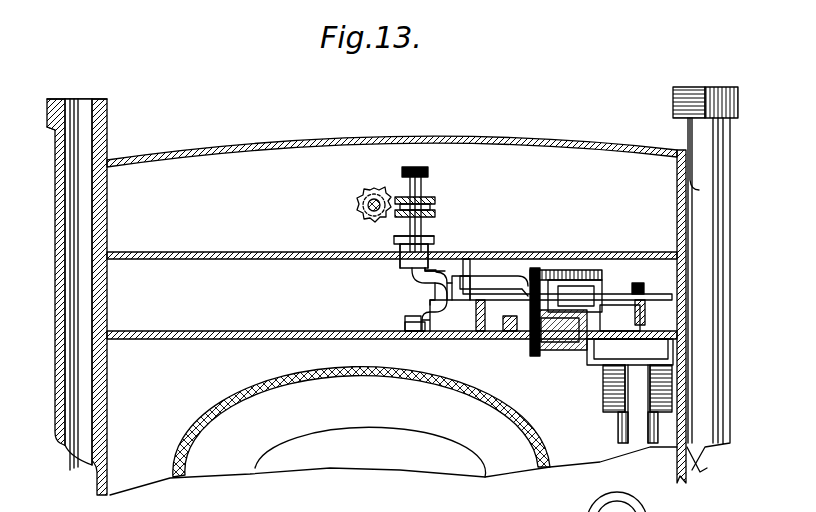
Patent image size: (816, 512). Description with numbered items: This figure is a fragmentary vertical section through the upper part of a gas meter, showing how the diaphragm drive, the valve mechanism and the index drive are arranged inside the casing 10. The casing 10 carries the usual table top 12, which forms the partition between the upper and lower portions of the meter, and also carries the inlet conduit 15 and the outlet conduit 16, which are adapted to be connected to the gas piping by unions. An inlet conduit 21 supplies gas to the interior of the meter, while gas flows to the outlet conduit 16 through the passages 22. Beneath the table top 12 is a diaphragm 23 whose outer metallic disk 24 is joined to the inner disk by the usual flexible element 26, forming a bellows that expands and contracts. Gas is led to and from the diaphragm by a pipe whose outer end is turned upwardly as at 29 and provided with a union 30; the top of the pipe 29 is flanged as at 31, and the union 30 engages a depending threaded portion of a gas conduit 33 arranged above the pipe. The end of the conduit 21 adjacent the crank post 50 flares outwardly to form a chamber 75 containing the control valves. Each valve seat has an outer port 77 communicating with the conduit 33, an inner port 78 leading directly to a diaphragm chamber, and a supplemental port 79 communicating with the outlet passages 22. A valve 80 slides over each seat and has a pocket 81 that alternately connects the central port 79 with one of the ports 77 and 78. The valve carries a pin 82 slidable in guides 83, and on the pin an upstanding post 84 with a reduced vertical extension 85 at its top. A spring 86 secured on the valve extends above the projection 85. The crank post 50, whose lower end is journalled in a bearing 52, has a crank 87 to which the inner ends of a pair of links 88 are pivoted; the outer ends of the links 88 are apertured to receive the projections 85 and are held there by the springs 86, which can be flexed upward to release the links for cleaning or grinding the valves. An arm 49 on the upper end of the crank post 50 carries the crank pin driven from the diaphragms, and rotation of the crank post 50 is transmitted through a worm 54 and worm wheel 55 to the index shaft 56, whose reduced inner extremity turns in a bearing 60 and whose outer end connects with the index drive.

The casing 10 is at (100, 493).
The table top 12 is at (250, 340).
The inlet conduit 15 is at (55, 268).
The outlet conduit 16 is at (729, 211).
The inlet conduit 21 is at (232, 257).
The passages 22 is at (541, 341).
The diaphragm 23 is at (205, 436).
The outer metallic disk 24 is at (370, 452).
The flexible element 26 is at (470, 392).
The upturned pipe end 29 is at (618, 437).
The union 30 is at (604, 410).
The flange 31 is at (604, 396).
The gas conduit 33 is at (582, 361).
The arm 49 is at (428, 172).
The crank post 50 is at (408, 186).
The lower bearing 52 is at (405, 325).
The worm 54 is at (436, 204).
The worm wheel 55 is at (356, 200).
The index shaft 56 is at (366, 210).
The bearing 60 is at (433, 240).
The chamber 75 is at (530, 251).
The outer port 77 is at (598, 334).
The inner port 78 is at (515, 333).
The supplemental port 79 is at (553, 346).
The valve 80 is at (612, 270).
The pocket 81 is at (602, 282).
The pin 82 is at (668, 292).
The guides 83 is at (634, 289).
The upstanding post 84 is at (576, 270).
The vertical extension 85 is at (480, 276).
The spring 86 is at (598, 270).
The crank 87 is at (430, 289).
The links 88 is at (478, 258).